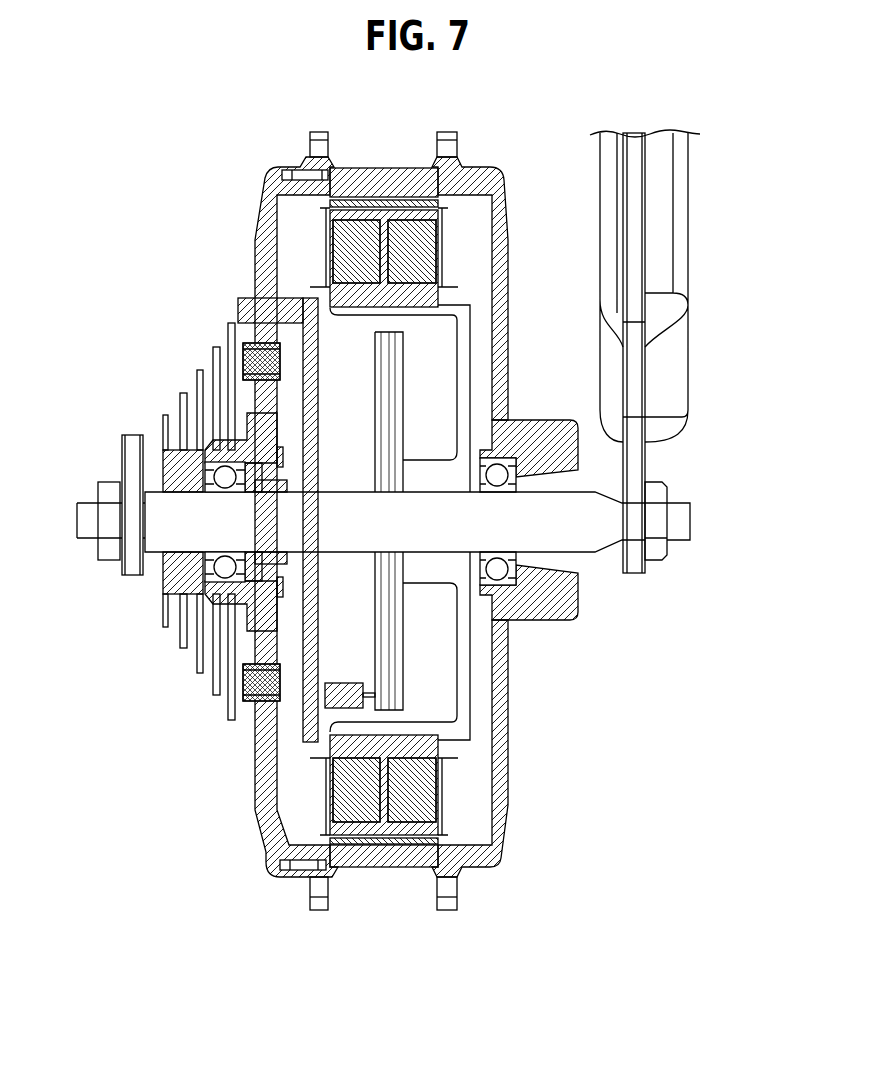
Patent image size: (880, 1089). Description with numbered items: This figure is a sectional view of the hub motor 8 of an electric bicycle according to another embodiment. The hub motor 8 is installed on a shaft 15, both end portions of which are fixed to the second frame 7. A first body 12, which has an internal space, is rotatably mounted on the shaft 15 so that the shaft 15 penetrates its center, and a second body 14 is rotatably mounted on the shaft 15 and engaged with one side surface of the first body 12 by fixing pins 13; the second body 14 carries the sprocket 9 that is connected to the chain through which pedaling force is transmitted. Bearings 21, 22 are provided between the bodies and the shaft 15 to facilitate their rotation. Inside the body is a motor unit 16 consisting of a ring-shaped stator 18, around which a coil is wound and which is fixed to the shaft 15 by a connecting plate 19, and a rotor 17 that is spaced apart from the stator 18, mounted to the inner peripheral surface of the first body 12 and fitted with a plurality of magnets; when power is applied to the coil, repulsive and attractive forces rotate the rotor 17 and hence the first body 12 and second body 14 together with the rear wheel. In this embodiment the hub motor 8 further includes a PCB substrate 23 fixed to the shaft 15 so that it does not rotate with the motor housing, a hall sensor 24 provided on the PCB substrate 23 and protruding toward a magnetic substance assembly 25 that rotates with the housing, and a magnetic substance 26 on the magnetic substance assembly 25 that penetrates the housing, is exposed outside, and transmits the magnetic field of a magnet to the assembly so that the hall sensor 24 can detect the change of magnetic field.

The second frame 7 is at (132, 455).
The hub motor 8 is at (236, 855).
The sprocket 9 is at (163, 420).
The first body 12 is at (270, 817).
The fixing pins 13 is at (253, 393).
The second body 14 is at (242, 355).
The shaft 15 is at (682, 518).
The motor unit 16 is at (458, 815).
The rotor 17 is at (397, 858).
The stator 18 is at (366, 800).
The connecting plate 19 is at (467, 667).
The bearing 21 is at (535, 443).
The bearing 22 is at (213, 457).
The PCB substrate 23 is at (395, 687).
The hall sensor 24 is at (325, 695).
The magnetic substance assembly 25 is at (300, 737).
The magnetic substance 26 is at (238, 307).